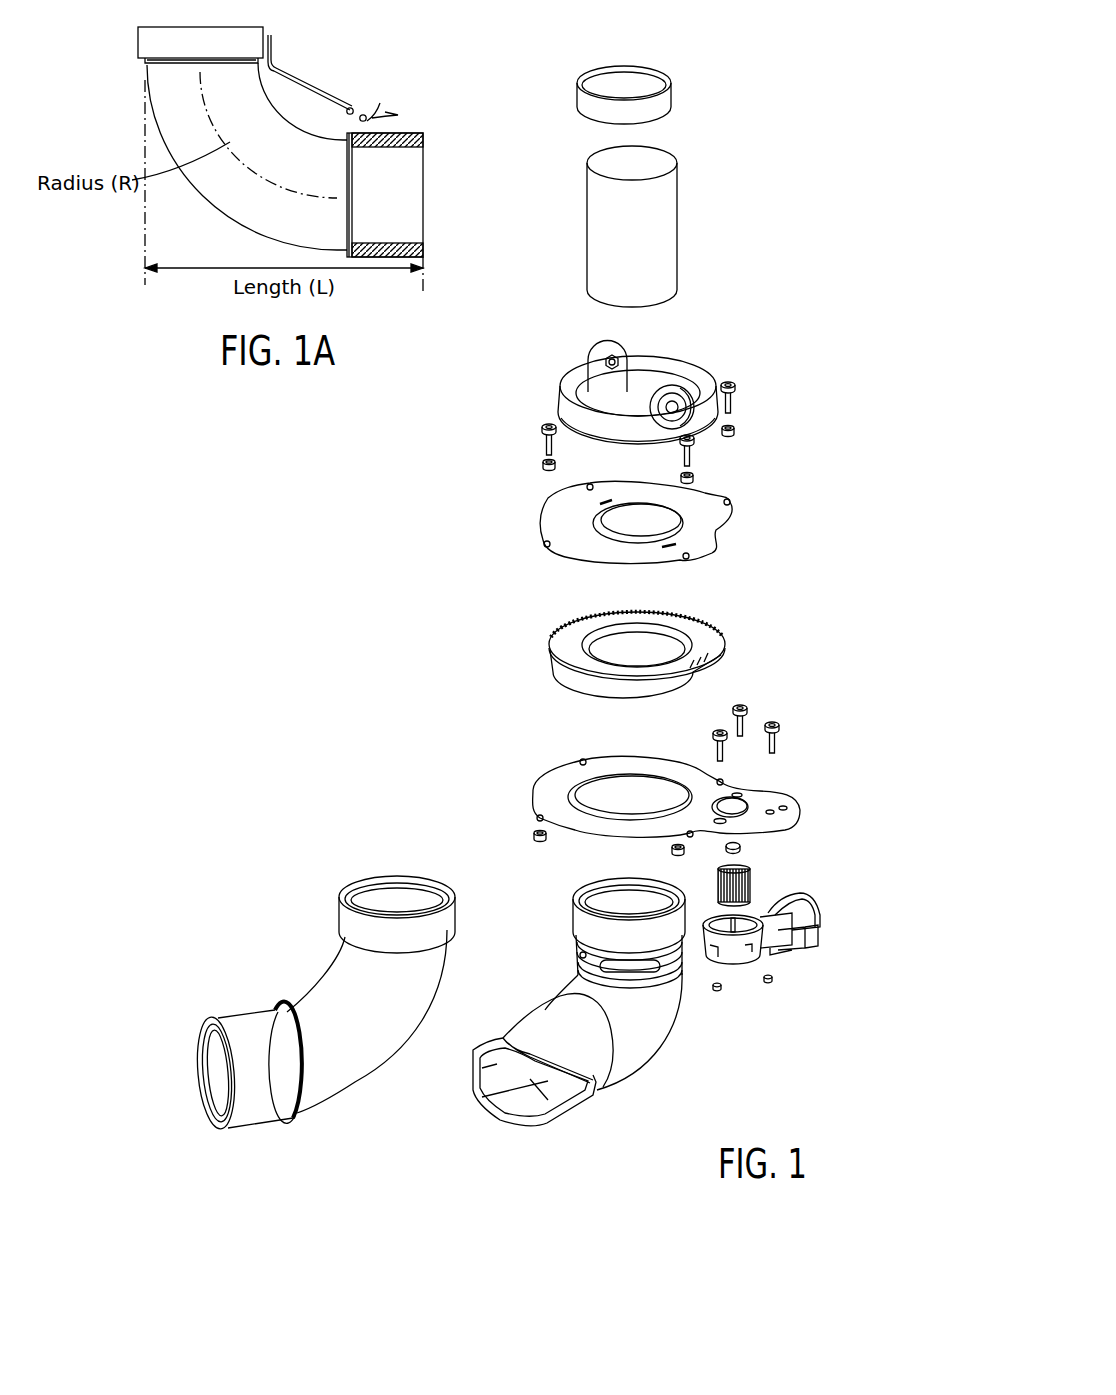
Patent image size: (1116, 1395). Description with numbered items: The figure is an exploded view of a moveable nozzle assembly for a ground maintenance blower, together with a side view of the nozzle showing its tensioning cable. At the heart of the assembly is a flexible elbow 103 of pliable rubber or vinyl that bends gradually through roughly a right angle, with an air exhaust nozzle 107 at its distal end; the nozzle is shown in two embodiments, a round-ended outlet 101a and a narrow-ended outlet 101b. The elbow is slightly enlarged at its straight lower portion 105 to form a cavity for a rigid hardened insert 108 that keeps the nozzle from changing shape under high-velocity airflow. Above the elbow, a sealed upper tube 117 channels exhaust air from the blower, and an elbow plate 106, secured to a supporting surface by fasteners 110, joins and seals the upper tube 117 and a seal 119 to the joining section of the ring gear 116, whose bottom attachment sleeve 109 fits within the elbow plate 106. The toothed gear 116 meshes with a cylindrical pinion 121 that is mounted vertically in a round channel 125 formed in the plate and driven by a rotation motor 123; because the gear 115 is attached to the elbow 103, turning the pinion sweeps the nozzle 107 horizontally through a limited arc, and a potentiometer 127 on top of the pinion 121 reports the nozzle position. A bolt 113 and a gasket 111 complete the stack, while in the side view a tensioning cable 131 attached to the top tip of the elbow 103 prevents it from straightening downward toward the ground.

In FIG. 1, the outlet 101a is at (212, 1132).
In FIG. 1, the outlet 101b is at (568, 1040).
In FIG. 1A, the flexible elbow 103 is at (217, 207).
In FIG. 1, the flexible elbow 103 is at (645, 1032).
In FIG. 1A, the lower portion 105 is at (412, 133).
In FIG. 1, the lower portion 105 is at (538, 1020).
In FIG. 1, the elbow plate 106 is at (552, 790).
In FIG. 1, the air exhaust nozzle 107 is at (456, 1152).
In FIG. 1, the hardened insert 108 is at (473, 1088).
In FIG. 1, the bottom attachment sleeve 109 is at (707, 652).
In FIG. 1, the fasteners 110 is at (777, 733).
In FIG. 1, the gasket plate 111 is at (710, 522).
In FIG. 1, the cap assembly 113 is at (690, 372).
In FIG. 1, the gear 115 is at (735, 400).
In FIG. 1, the ring gear 116 is at (713, 623).
In FIG. 1, the upper tube 117 is at (673, 231).
In FIG. 1, the seal 119 is at (668, 100).
In FIG. 1, the pinion 121 is at (752, 882).
In FIG. 1, the rotation motor 123 is at (803, 922).
In FIG. 1, the channel 125 is at (760, 912).
In FIG. 1, the potentiometer 127 is at (741, 846).
In FIG. 1A, the tensioning cable 131 is at (317, 92).